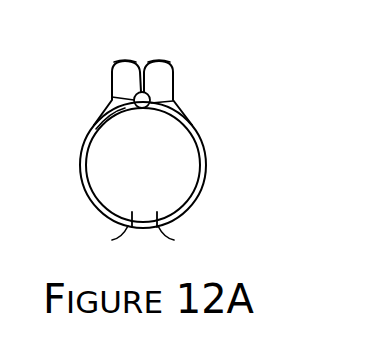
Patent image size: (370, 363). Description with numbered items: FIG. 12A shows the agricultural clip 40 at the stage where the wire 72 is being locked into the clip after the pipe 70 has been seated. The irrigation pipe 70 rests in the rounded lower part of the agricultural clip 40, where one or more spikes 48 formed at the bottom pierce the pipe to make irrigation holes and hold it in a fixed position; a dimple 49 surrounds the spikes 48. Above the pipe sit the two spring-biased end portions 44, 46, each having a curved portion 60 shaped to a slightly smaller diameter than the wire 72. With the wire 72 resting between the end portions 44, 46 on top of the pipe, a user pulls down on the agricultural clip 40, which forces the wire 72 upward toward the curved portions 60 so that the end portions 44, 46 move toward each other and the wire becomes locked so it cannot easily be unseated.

The agricultural clip 40 is at (205, 150).
The first end portion 44 is at (112, 72).
The second end portion 46 is at (175, 71).
The spikes 48 is at (132, 221).
The dimple 49 is at (112, 240).
The curved portion 60 is at (126, 61).
The pipe 70 is at (96, 129).
The wire 72 is at (151, 103).